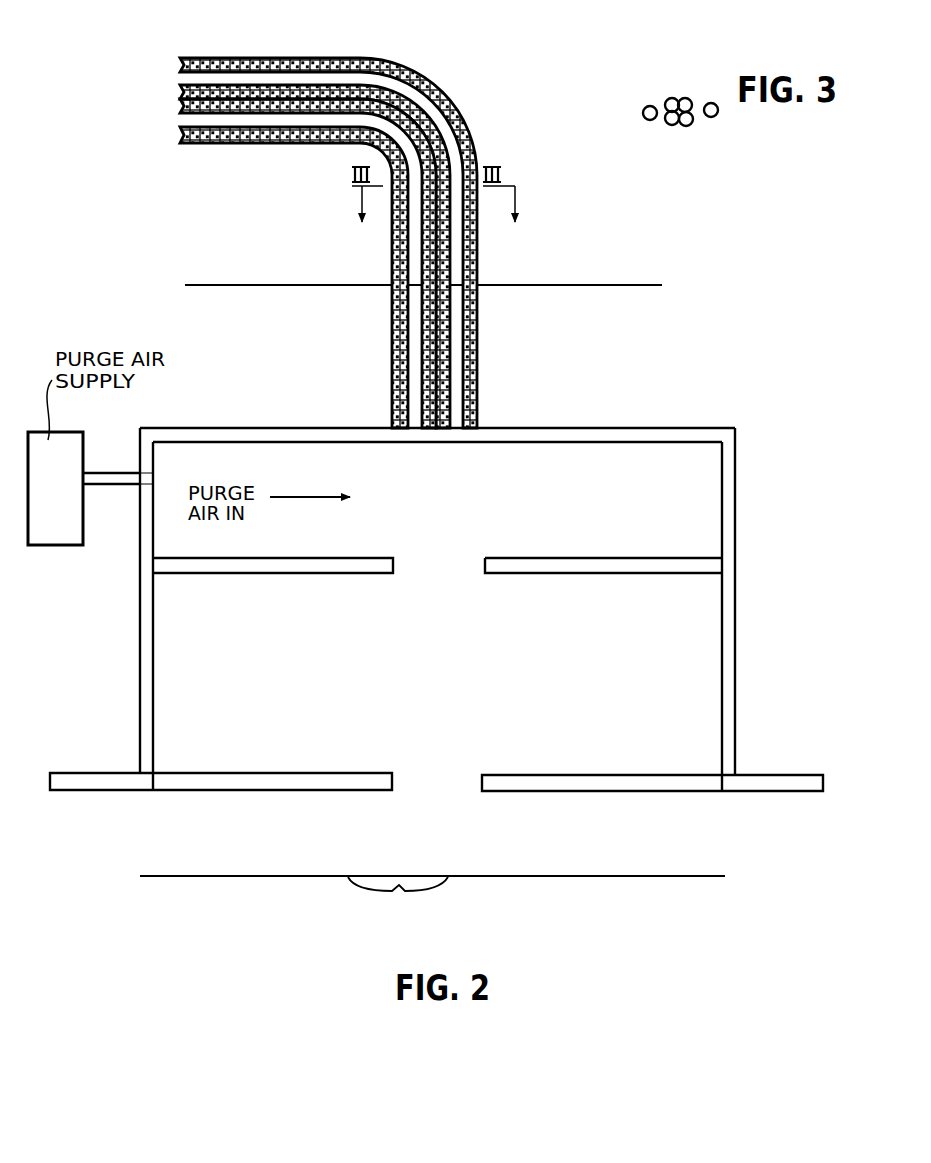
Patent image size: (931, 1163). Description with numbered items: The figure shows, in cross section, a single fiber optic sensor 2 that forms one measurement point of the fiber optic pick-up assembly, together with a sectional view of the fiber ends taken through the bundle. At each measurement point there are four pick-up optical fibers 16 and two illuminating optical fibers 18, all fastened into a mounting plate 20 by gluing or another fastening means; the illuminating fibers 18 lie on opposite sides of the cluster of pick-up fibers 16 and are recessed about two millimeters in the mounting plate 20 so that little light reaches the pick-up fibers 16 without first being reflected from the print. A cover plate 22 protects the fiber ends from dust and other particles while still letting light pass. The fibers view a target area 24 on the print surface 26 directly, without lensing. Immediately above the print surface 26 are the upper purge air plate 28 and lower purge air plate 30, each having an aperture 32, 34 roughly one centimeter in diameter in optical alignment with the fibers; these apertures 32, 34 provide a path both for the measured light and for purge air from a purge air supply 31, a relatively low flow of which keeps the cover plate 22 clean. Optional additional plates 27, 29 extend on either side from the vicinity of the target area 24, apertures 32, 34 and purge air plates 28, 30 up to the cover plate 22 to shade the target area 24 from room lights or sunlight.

In FIG. 2, the fiber optic sensor 2 is at (205, 263).
In FIG. 2, the pick-up optical fibers 16 is at (413, 363).
In FIG. 3, the pick-up optical fibers 16 is at (690, 122).
In FIG. 2, the illuminating optical fibers 18 is at (392, 257).
In FIG. 3, the illuminating optical fibers 18 is at (706, 104).
In FIG. 2, the mounting plate 20 is at (603, 275).
In FIG. 2, the cover plate 22 is at (608, 435).
In FIG. 2, the target area 24 is at (411, 913).
In FIG. 2, the print surface 26 is at (698, 852).
In FIG. 2, the additional plate 27 is at (737, 478).
In FIG. 2, the upper purge air plate 28 is at (527, 565).
In FIG. 2, the additional plate 29 is at (145, 518).
In FIG. 2, the lower purge air plate 30 is at (578, 785).
In FIG. 2, the purge air supply 31 is at (70, 456).
In FIG. 2, the aperture 32 is at (437, 570).
In FIG. 2, the aperture 34 is at (413, 767).